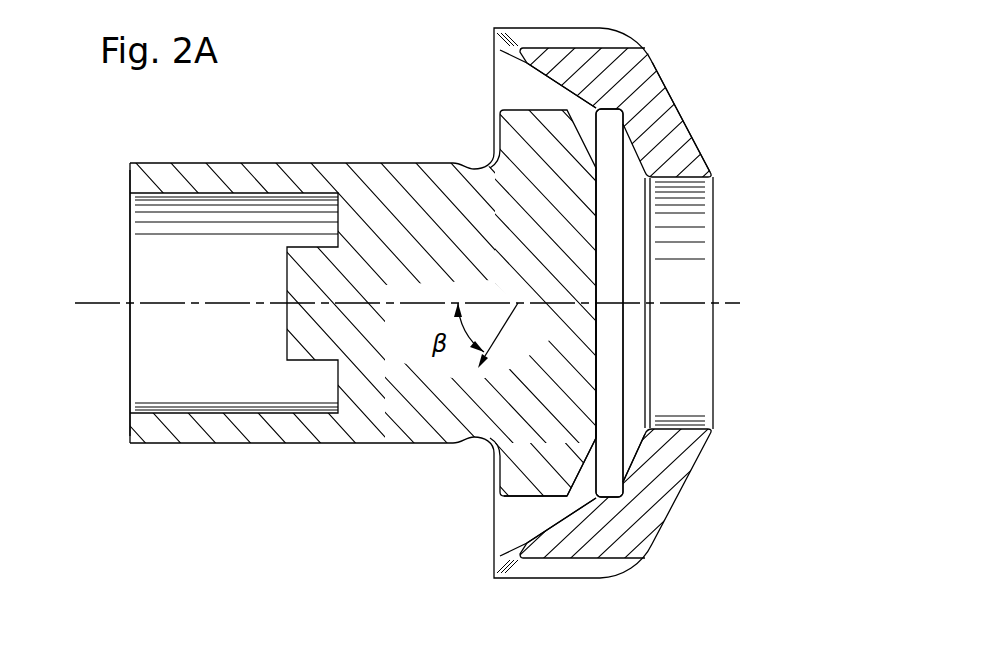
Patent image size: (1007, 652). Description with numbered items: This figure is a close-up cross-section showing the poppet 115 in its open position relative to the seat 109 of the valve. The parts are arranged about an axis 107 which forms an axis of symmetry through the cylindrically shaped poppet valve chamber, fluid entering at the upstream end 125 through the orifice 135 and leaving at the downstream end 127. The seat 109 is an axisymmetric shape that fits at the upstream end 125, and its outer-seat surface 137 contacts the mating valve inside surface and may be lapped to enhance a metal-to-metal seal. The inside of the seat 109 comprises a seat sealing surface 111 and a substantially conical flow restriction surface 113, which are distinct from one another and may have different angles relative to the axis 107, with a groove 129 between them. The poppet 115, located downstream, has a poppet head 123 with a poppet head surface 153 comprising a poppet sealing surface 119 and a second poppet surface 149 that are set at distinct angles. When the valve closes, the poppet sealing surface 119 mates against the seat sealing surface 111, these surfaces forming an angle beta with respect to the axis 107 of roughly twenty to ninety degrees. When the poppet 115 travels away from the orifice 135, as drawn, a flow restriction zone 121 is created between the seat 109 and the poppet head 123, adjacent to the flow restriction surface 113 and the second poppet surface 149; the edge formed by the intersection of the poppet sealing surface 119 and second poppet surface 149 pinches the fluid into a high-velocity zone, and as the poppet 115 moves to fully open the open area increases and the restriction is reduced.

The axis 107 is at (735, 303).
The seat 109 is at (655, 58).
The seat sealing surface 111 is at (644, 442).
The flow restriction surface 113 is at (543, 528).
The poppet 115 is at (373, 140).
The poppet sealing surface 119 is at (623, 497).
The flow restriction zone 121 is at (547, 508).
The poppet head 123 is at (560, 367).
The upstream end 125 is at (636, 342).
The downstream end 127 is at (126, 277).
The groove 129 is at (600, 443).
The orifice 135 is at (678, 361).
The outer-seat surface 137 is at (682, 115).
The second poppet surface 149 is at (525, 500).
The poppet head surface 153 is at (588, 117).